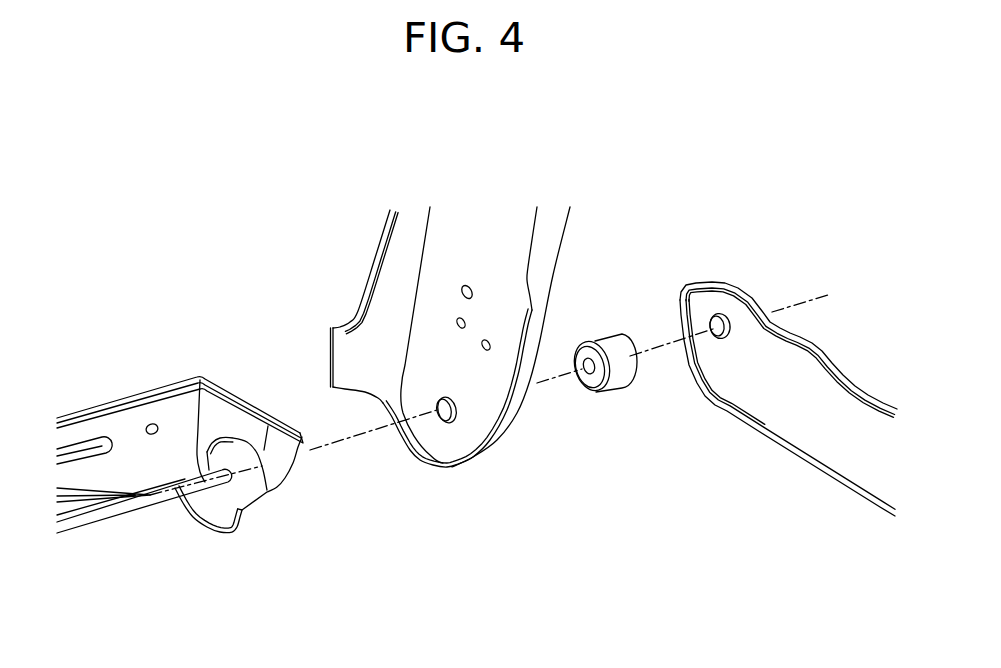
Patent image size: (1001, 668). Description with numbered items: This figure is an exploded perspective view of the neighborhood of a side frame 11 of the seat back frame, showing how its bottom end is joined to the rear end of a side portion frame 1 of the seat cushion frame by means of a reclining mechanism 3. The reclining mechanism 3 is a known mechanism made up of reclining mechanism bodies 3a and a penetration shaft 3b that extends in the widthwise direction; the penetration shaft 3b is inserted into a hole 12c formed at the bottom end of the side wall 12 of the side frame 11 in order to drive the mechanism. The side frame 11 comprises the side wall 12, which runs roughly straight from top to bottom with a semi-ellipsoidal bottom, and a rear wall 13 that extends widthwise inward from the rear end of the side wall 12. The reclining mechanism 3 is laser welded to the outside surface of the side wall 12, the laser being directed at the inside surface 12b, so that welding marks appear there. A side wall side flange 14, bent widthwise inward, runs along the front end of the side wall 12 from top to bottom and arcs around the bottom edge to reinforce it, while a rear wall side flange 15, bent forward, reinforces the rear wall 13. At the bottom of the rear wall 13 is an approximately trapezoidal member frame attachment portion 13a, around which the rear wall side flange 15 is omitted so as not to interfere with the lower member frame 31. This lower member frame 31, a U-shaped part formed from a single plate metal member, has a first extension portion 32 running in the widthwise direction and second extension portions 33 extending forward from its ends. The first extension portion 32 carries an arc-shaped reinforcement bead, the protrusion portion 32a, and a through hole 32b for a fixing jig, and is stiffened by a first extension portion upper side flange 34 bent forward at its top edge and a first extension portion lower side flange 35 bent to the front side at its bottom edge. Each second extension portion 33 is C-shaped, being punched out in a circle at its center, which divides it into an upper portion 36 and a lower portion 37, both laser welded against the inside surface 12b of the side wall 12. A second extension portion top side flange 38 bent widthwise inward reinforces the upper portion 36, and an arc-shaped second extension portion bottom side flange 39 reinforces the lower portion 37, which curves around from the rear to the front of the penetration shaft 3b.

The side portion frame 1 is at (830, 362).
The reclining mechanism 3 is at (624, 371).
The reclining mechanism body 3a is at (611, 336).
The penetration shaft 3b is at (108, 516).
The side frame 11 is at (434, 327).
The side wall 12 is at (477, 418).
The inside surface 12b is at (473, 227).
The hole 12c is at (440, 420).
The rear wall 13 is at (387, 345).
The member frame attachment portion 13a is at (347, 345).
The side wall side flange 14 is at (550, 242).
The rear wall side flange 15 is at (378, 263).
The lower member frame 31 is at (199, 446).
The first extension portion 32 is at (74, 430).
The protrusion portion 32a is at (68, 453).
The through hole 32b is at (158, 425).
The second extension portion 33 is at (222, 428).
The first extension portion upper side flange 34 is at (122, 418).
The first extension portion lower side flange 35 is at (92, 488).
The upper portion 36 is at (268, 492).
The lower portion 37 is at (240, 512).
The second extension portion top side flange 38 is at (258, 413).
The second extension portion bottom side flange 39 is at (217, 524).